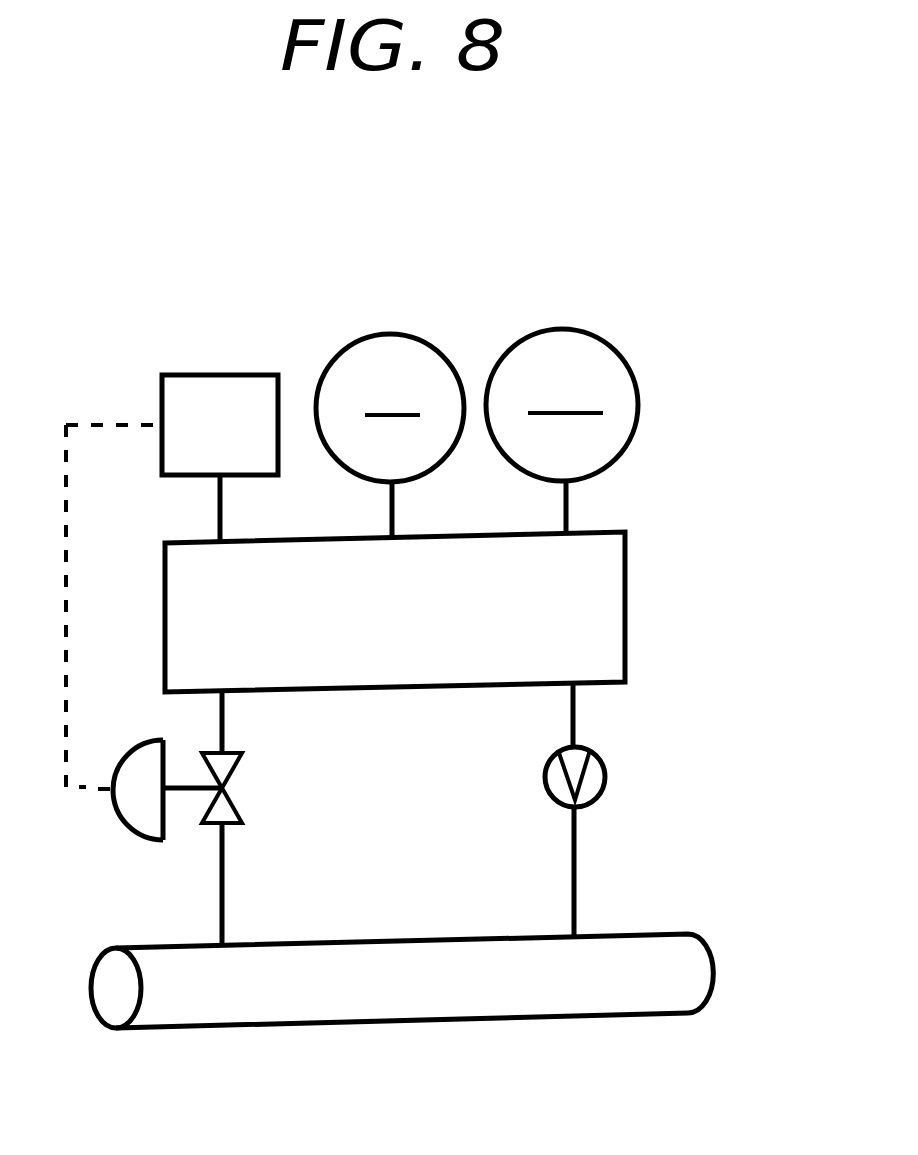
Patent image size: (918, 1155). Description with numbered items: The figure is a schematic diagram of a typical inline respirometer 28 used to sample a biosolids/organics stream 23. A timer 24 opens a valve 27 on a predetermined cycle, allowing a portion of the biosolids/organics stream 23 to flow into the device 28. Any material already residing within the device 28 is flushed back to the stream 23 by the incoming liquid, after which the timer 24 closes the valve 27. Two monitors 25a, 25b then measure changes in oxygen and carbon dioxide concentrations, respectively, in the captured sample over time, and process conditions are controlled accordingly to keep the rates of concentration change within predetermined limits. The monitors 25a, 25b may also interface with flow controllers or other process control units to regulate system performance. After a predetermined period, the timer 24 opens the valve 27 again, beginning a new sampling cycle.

The biosolids/organics stream 23 is at (367, 1027).
The timer 24 is at (213, 375).
The monitor 25a is at (372, 334).
The monitor 25b is at (556, 330).
The valve 27 is at (128, 748).
The inline respirometer 28 is at (643, 607).